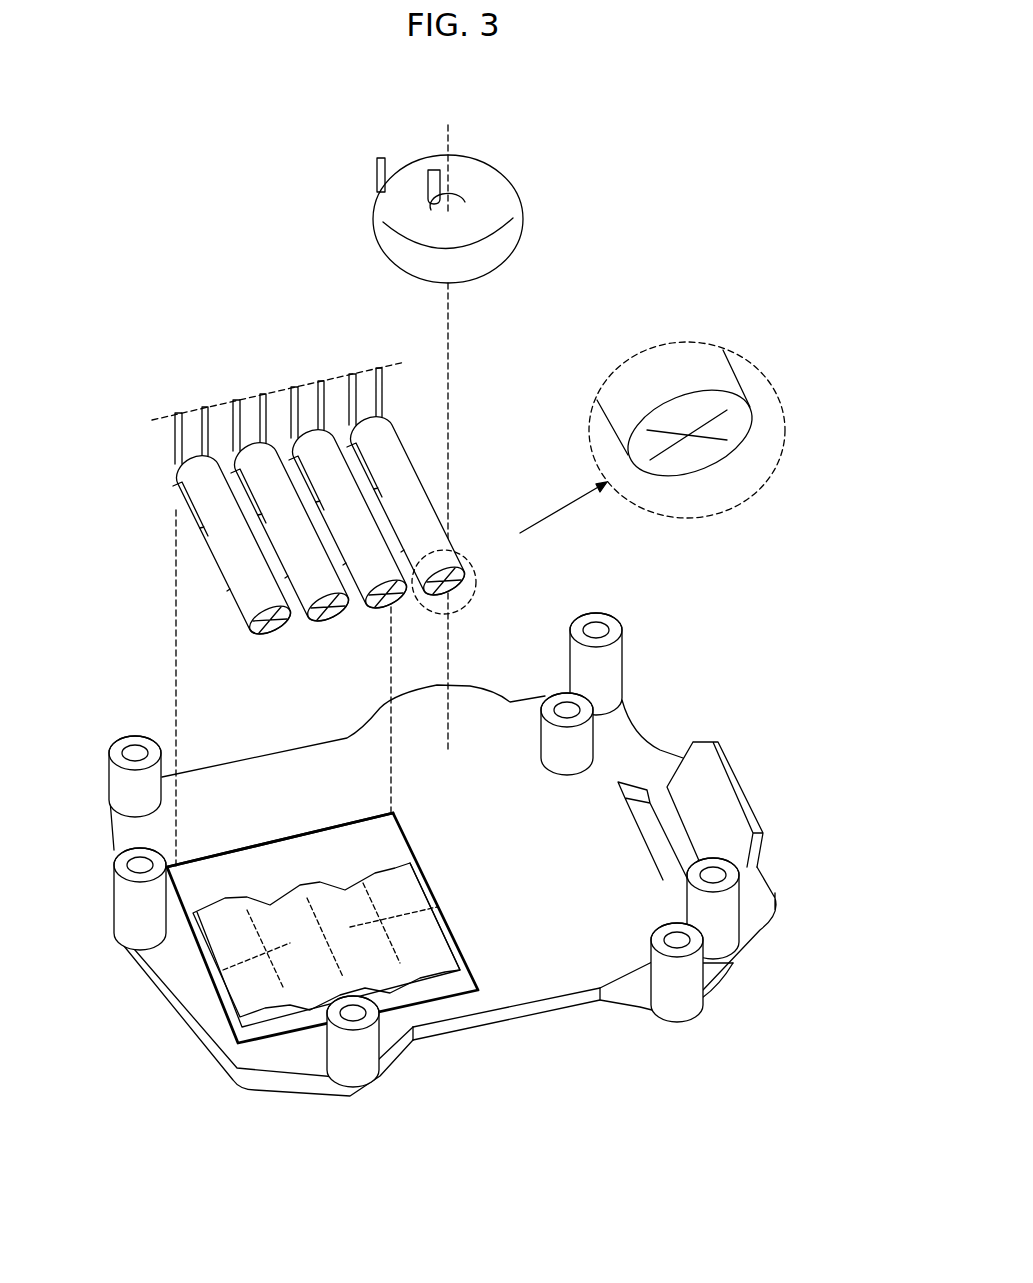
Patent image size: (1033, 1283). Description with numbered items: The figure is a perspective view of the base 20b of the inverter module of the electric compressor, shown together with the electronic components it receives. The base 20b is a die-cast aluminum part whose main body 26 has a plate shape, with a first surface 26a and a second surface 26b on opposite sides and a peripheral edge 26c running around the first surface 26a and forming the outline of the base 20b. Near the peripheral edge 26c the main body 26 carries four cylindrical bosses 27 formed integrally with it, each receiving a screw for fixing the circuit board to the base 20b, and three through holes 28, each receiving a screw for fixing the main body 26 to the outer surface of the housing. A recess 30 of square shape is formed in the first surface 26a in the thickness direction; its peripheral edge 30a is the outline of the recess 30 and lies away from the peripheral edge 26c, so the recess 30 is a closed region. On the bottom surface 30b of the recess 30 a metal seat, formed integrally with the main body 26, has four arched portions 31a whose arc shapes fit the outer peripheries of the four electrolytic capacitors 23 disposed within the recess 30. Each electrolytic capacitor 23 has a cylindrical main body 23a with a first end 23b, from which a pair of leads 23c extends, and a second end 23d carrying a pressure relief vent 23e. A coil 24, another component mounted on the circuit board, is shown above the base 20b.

The base 20b is at (730, 713).
The electrolytic capacitors 23 is at (449, 490).
The cylindrical main body 23a is at (449, 425).
The first end 23b is at (182, 464).
The pair of leads 23c is at (178, 414).
The second end 23d is at (278, 628).
The pressure relief vent 23e is at (670, 450).
The coil 24 is at (503, 190).
The main body 26 is at (758, 870).
The first surface 26a is at (523, 997).
The second surface 26b is at (452, 1038).
The peripheral edge 26c is at (577, 997).
The cylindrical bosses 27 is at (557, 694).
The through holes 28 is at (617, 662).
The recess 30 is at (306, 930).
The peripheral edge 30a is at (200, 1047).
The bottom surface 30b is at (245, 853).
The arched portions 31a is at (243, 972).